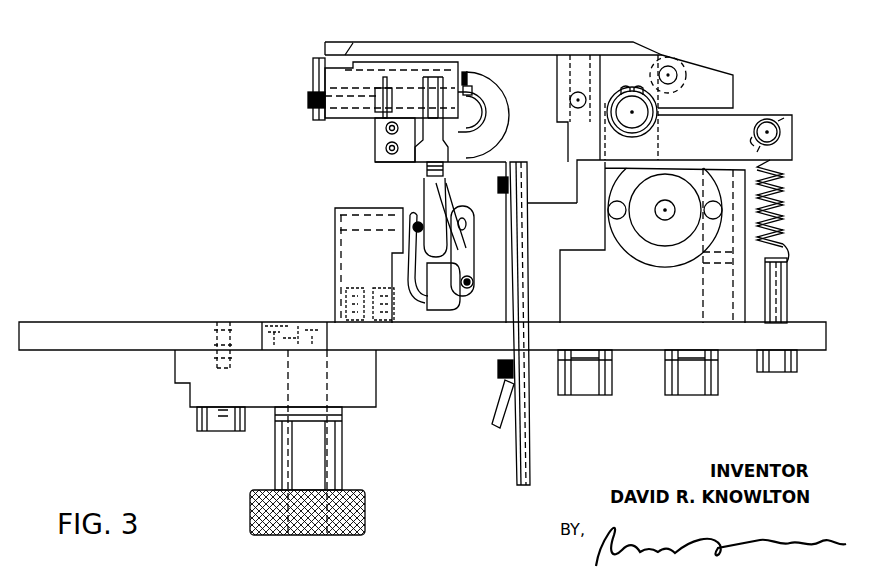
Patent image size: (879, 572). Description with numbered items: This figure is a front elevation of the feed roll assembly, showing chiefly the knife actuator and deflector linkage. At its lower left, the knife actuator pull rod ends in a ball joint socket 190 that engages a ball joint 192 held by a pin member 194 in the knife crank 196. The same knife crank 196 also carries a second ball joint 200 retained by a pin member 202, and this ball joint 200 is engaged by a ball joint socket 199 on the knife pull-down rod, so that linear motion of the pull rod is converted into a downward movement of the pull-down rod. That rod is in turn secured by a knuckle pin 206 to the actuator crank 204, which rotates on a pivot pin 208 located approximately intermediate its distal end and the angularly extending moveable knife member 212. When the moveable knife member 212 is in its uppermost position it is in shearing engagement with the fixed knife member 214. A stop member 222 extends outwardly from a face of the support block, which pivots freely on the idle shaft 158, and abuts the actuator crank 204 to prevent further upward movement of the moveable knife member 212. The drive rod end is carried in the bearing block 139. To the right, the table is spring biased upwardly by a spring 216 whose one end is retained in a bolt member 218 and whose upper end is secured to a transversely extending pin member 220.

The bearing block 139 is at (630, 300).
The idle shaft 158 is at (636, 104).
The ball joint socket 190 is at (456, 303).
The ball joint 192 is at (470, 270).
The pin member 194 is at (470, 284).
The knife crank 196 is at (410, 262).
The ball joint socket 199 is at (430, 198).
The ball joint 200 is at (445, 212).
The pin member 202 is at (468, 224).
The actuator crank 204 is at (344, 112).
The knuckle pin 206 is at (308, 98).
The pivot pin 208 is at (465, 72).
The moveable knife member 212 is at (313, 68).
The fixed knife member 214 is at (325, 50).
The spring 216 is at (785, 212).
The bolt member 218 is at (788, 293).
The pin member 220 is at (767, 124).
The stop member 222 is at (416, 152).